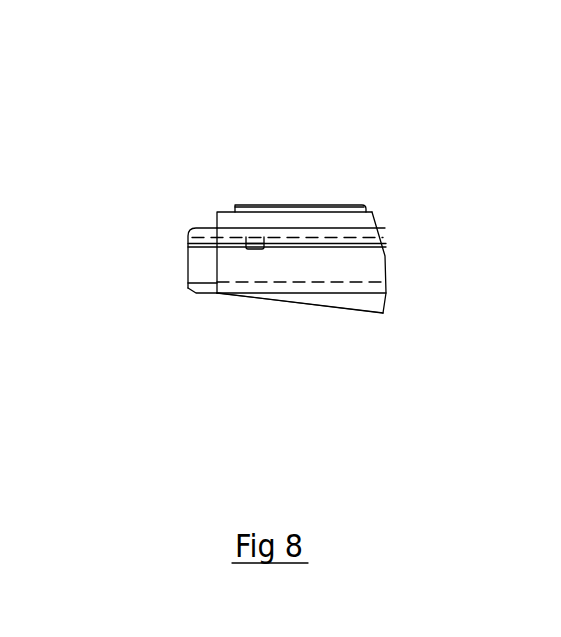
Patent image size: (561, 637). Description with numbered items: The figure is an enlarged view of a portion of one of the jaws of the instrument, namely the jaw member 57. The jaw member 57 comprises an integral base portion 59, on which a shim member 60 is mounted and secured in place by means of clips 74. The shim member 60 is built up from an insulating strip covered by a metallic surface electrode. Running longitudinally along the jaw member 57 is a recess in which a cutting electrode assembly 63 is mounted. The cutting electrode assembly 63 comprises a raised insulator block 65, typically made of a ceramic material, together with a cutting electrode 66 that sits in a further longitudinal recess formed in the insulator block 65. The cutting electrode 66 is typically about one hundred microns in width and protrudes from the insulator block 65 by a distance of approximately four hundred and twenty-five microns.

The jaw member 57 is at (230, 317).
The base portion 59 is at (300, 270).
The shim member 60 is at (337, 232).
The cutting electrode assembly 63 is at (221, 197).
The insulator block 65 is at (328, 216).
The cutting electrode 66 is at (307, 203).
The clips 74 is at (258, 234).